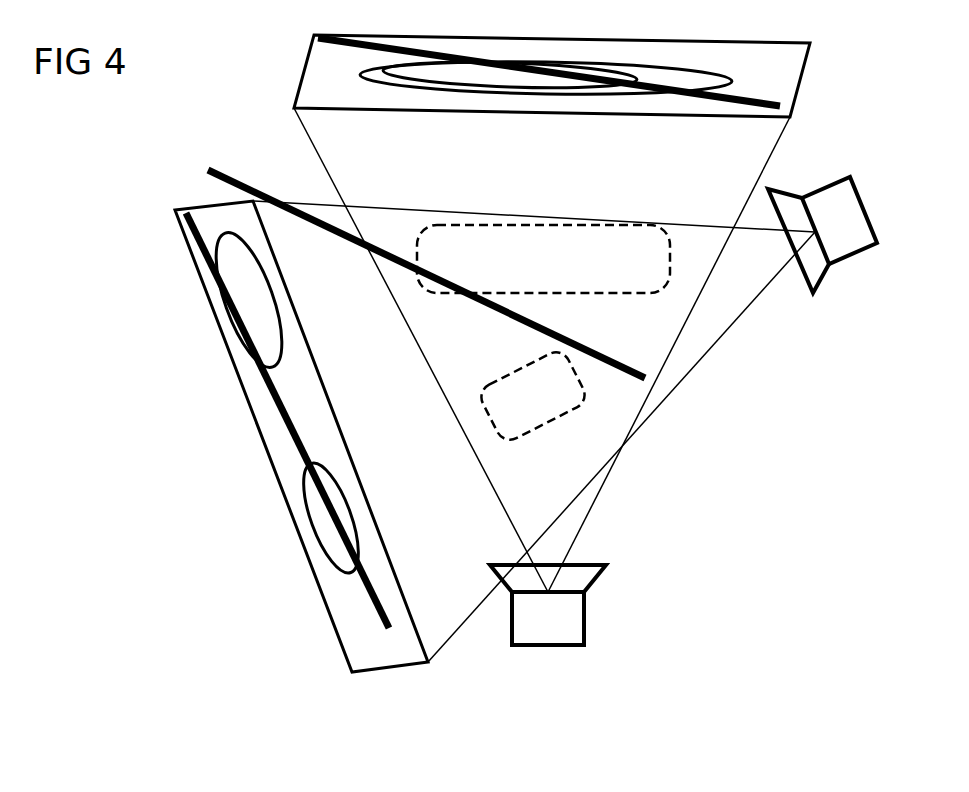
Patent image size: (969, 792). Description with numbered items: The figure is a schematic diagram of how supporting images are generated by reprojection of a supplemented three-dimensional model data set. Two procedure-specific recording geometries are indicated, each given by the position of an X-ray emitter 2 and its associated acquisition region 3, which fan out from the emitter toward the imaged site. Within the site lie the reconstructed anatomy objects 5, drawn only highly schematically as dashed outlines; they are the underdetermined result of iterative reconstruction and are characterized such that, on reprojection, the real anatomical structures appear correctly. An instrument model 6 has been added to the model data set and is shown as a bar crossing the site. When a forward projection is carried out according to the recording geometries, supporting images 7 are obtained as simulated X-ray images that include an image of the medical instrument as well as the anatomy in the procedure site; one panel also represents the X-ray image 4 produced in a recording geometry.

The X-ray emitter 2 is at (585, 618).
The acquisition region 3 is at (320, 158).
The X-ray image 4 is at (255, 421).
The reconstructed anatomy object 5 is at (637, 293).
The instrument model 6 is at (209, 170).
The supporting image 7 is at (307, 64).